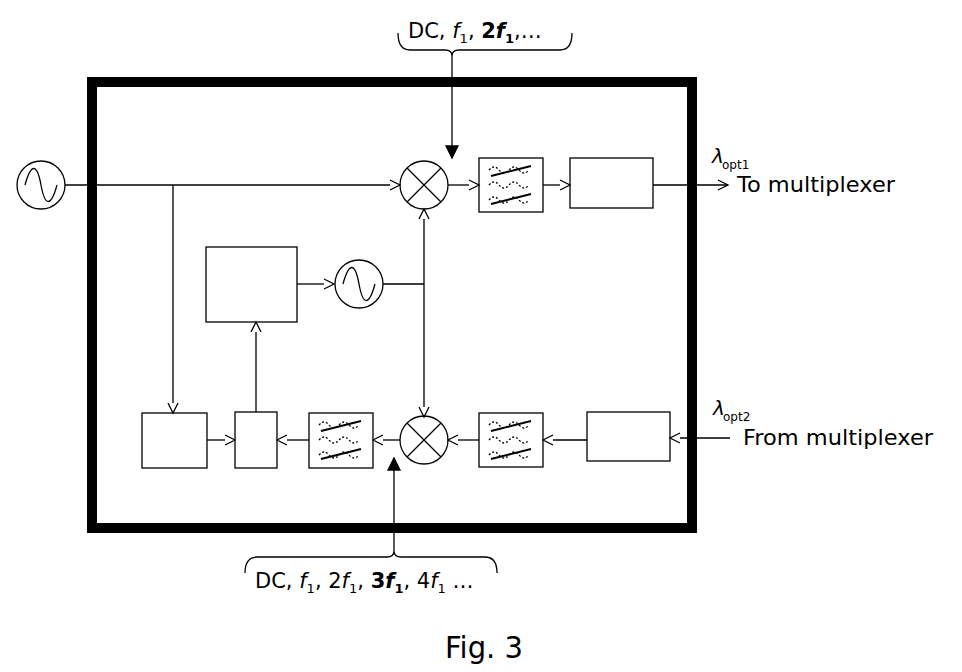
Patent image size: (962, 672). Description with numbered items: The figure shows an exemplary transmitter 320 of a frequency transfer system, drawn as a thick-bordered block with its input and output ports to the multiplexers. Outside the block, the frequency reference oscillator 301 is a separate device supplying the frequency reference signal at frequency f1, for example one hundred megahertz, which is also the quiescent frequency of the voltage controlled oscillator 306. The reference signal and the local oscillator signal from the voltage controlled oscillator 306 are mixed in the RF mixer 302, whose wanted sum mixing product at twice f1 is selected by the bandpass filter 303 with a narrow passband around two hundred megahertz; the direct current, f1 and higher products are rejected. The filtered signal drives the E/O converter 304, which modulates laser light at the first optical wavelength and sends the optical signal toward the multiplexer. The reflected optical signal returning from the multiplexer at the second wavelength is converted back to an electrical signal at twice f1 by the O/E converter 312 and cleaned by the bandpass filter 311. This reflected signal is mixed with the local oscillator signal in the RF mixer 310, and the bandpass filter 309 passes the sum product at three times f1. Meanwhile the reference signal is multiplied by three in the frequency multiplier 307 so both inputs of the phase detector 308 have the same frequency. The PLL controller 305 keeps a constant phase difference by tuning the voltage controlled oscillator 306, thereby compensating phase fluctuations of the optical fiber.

The frequency reference oscillator 301 is at (25, 203).
The RF mixer 302 is at (424, 161).
The bandpass filter 303 is at (518, 158).
The E/O converter 304 is at (644, 158).
The PLL controller 305 is at (258, 247).
The voltage controlled oscillator 306 is at (365, 260).
The frequency multiplier 307 is at (180, 468).
The phase detector 308 is at (268, 468).
The bandpass filter 309 is at (357, 468).
The RF mixer 310 is at (440, 421).
The bandpass filter 311 is at (517, 467).
The O/E converter 312 is at (633, 461).
The transmitter 320 is at (377, 77).